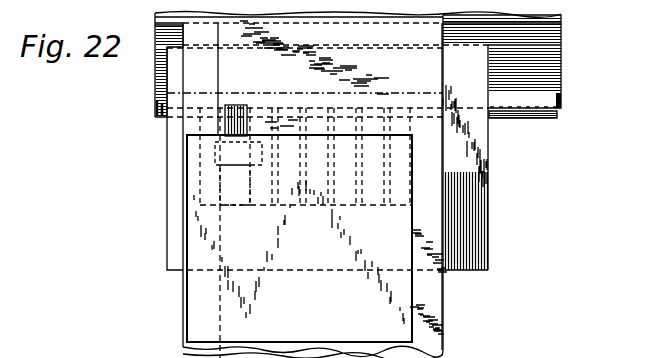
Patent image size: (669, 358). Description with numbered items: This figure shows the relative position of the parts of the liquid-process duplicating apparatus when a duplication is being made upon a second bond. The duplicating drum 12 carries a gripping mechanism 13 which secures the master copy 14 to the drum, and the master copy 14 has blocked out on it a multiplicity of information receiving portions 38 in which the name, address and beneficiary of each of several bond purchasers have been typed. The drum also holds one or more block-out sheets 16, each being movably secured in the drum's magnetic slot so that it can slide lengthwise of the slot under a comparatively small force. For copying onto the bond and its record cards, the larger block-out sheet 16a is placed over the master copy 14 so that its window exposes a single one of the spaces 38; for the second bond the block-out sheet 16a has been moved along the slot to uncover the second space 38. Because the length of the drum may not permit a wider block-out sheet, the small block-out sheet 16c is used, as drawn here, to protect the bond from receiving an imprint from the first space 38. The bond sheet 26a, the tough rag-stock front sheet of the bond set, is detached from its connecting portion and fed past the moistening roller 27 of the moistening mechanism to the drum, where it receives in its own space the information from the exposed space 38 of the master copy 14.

The duplicating drum 12 is at (556, 62).
The gripping mechanism 13 is at (510, 14).
The master copy 14 is at (485, 239).
The block-out sheet 16 is at (238, 173).
The block-out sheet 16a is at (438, 71).
The small block-out sheet 16c is at (185, 70).
The bond sheet 26a is at (400, 306).
The moistening roller 27 is at (540, 119).
The information receiving portions 38 is at (312, 108).